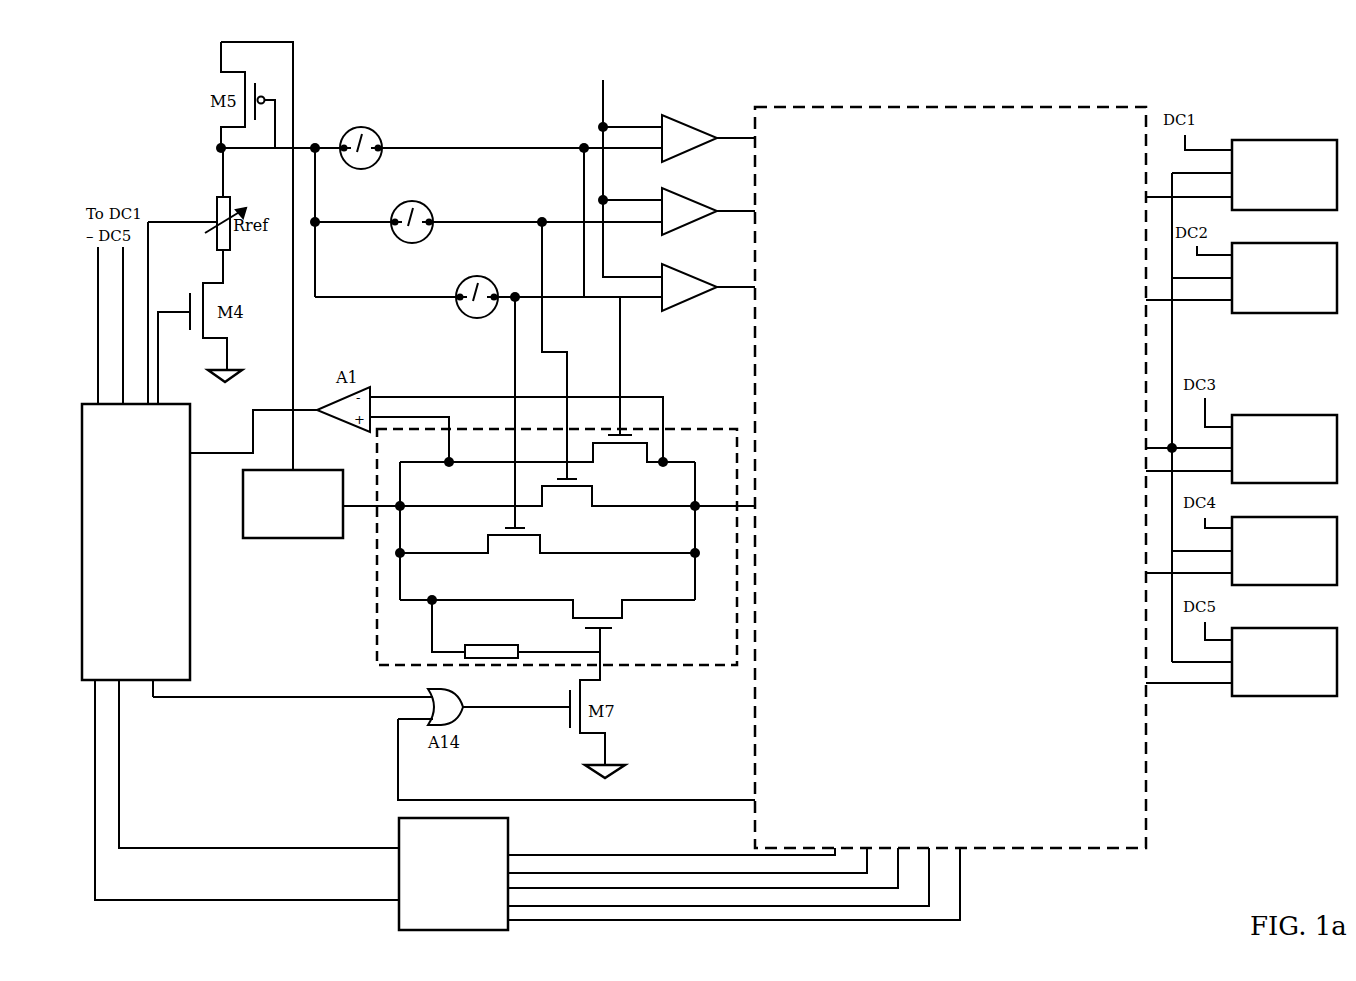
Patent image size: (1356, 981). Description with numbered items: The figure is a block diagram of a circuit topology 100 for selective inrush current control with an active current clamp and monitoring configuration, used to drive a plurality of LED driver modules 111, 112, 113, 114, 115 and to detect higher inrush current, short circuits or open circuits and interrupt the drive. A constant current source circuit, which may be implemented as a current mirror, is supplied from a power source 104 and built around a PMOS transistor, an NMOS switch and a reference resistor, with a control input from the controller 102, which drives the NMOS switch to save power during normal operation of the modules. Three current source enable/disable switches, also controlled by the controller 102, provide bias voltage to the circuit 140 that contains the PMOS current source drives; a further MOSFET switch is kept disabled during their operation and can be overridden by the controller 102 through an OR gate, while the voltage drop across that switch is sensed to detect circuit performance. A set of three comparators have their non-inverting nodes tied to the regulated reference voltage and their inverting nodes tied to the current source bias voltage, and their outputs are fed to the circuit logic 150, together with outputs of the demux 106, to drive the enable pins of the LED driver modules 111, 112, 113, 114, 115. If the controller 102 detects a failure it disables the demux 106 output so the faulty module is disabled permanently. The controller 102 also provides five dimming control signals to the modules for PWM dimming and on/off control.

The circuit topology 100 is at (678, 71).
The controller 102 is at (475, 52).
The power source 104 is at (293, 504).
The demux 106 is at (453, 874).
The LED driver module 1 111 is at (1284, 175).
The LED driver module 2 112 is at (1284, 278).
The LED driver module 3 113 is at (1284, 449).
The LED driver module 4 114 is at (1284, 551).
The LED driver module 5 115 is at (1284, 662).
The circuit 140 is at (566, 547).
The circuit logic 150 is at (952, 107).